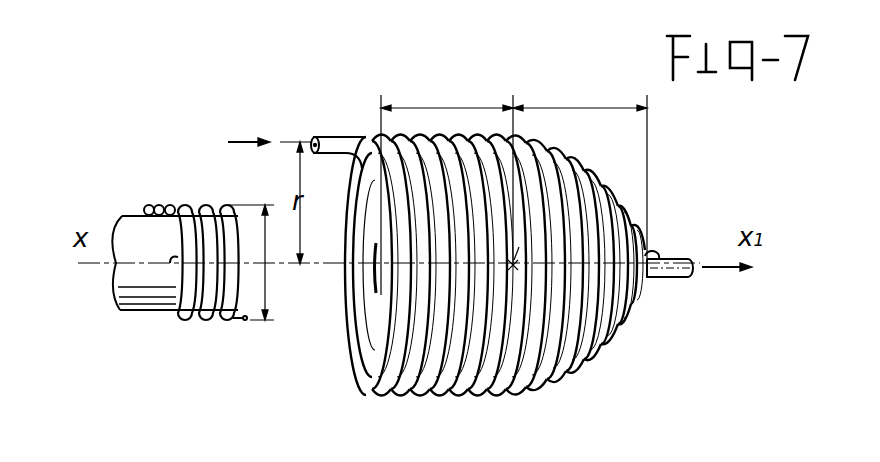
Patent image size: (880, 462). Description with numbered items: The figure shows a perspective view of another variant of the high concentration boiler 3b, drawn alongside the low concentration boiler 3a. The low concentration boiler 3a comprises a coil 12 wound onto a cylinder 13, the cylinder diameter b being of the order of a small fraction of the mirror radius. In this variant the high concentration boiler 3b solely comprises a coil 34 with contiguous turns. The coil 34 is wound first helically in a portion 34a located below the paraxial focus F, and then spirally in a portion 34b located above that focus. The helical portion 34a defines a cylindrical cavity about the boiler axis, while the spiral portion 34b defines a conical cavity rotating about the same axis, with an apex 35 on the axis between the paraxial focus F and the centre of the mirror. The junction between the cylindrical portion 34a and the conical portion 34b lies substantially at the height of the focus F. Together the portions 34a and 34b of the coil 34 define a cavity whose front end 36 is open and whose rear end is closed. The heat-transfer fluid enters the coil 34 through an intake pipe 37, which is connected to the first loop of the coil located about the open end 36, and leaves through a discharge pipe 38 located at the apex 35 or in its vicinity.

The low concentration boiler 3a is at (172, 332).
The high concentration boiler 3b is at (554, 399).
The coil 12 is at (199, 205).
The cylinder 13 is at (143, 288).
The coil 34 is at (362, 386).
The helical portion of the coil 34a is at (512, 75).
The spiral portion of the coil 34b is at (647, 75).
The apex 35 is at (662, 257).
The open front end 36 is at (365, 295).
The intake pipe 37 is at (348, 137).
The discharge pipe 38 is at (681, 279).